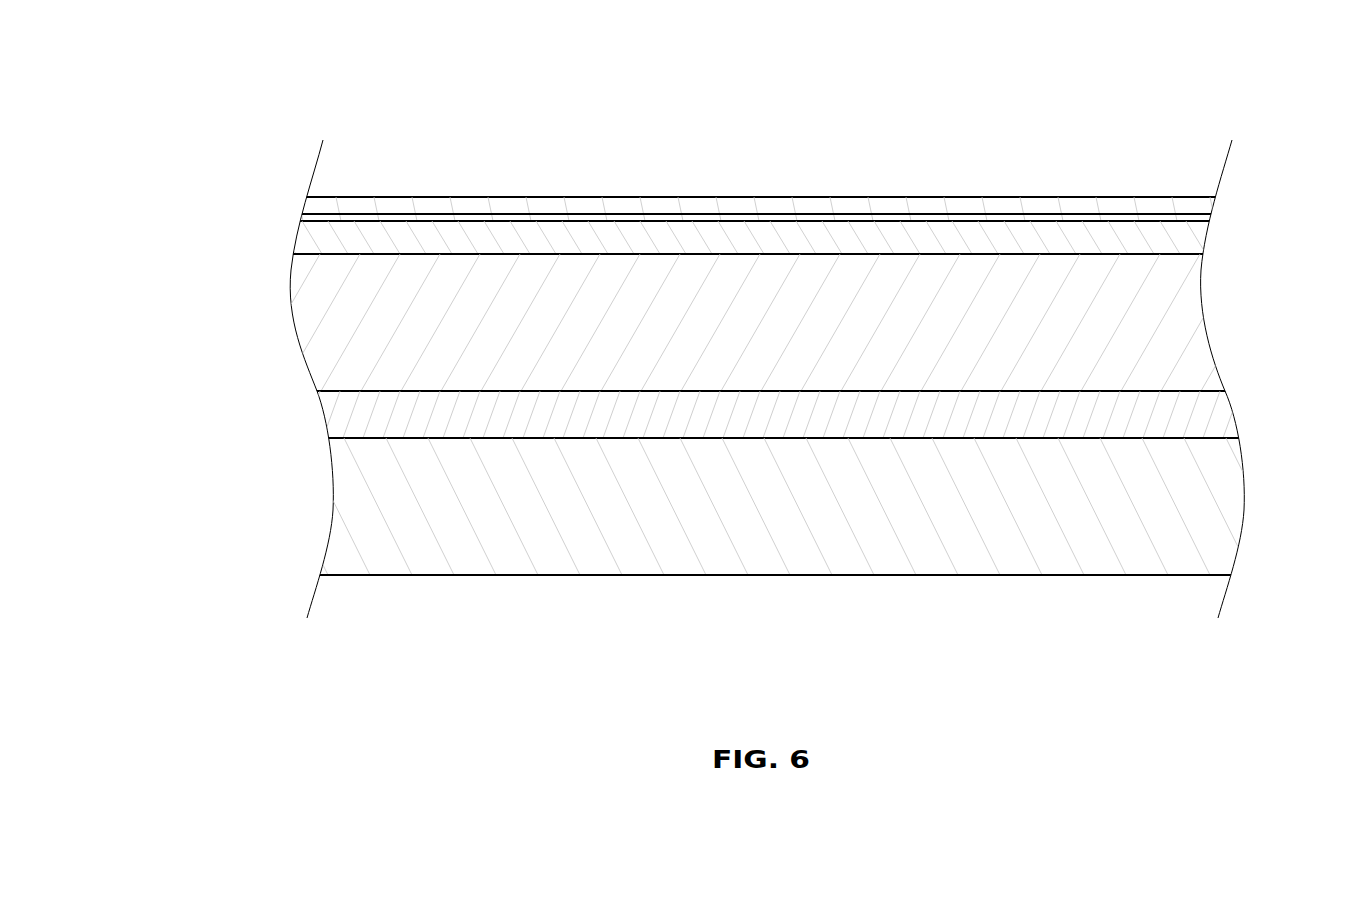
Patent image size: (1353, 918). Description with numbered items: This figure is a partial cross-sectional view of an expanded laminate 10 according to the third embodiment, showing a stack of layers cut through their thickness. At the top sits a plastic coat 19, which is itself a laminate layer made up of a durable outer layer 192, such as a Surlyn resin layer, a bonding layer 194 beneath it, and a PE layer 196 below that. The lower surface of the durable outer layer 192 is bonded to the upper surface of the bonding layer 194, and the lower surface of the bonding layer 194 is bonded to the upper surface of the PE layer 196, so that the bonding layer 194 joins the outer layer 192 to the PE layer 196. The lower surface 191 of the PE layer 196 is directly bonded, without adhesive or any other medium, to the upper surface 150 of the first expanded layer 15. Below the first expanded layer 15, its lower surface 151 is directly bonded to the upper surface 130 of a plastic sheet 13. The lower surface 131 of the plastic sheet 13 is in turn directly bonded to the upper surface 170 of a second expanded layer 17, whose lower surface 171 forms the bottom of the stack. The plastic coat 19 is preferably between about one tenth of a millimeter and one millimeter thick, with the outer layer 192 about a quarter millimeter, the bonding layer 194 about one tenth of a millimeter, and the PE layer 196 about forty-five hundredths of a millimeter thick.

The expanded laminate 10 is at (1058, 108).
The plastic coat 19 is at (178, 143).
The durable outer layer 192 is at (317, 210).
The bonding layer 194 is at (308, 219).
The PE layer 196 is at (308, 235).
The lower surface of the PE layer 191 is at (1152, 255).
The first expanded layer 15 is at (345, 290).
The upper surface of the first expanded layer 150 is at (1168, 253).
The lower surface of the first expanded layer 151 is at (1218, 392).
The plastic sheet 13 is at (345, 408).
The upper surface of the plastic sheet 130 is at (1183, 391).
The lower surface of the plastic sheet 131 is at (1230, 440).
The second expanded layer 17 is at (345, 522).
The upper surface of the second expanded layer 170 is at (1222, 438).
The lower surface of the second expanded layer 171 is at (1216, 575).